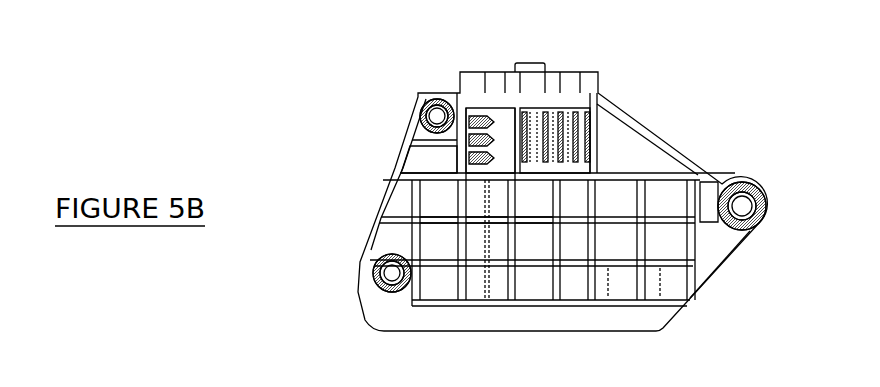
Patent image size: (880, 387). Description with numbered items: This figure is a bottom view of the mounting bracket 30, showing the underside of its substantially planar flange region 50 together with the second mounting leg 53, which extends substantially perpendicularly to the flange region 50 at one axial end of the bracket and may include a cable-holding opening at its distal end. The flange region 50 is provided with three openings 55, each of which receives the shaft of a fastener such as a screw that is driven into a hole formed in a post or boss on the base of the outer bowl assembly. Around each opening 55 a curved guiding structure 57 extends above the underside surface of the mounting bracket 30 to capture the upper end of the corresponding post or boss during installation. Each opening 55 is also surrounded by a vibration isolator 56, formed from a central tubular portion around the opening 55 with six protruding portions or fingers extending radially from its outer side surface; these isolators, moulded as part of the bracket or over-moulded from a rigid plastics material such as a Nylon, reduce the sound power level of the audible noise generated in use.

The mounting bracket 30 is at (700, 87).
The flange region 50 is at (430, 96).
The second mounting leg 53 is at (558, 82).
The opening 55 is at (418, 110).
The vibration isolator 56 is at (424, 122).
The curved guiding structure 57 is at (453, 110).